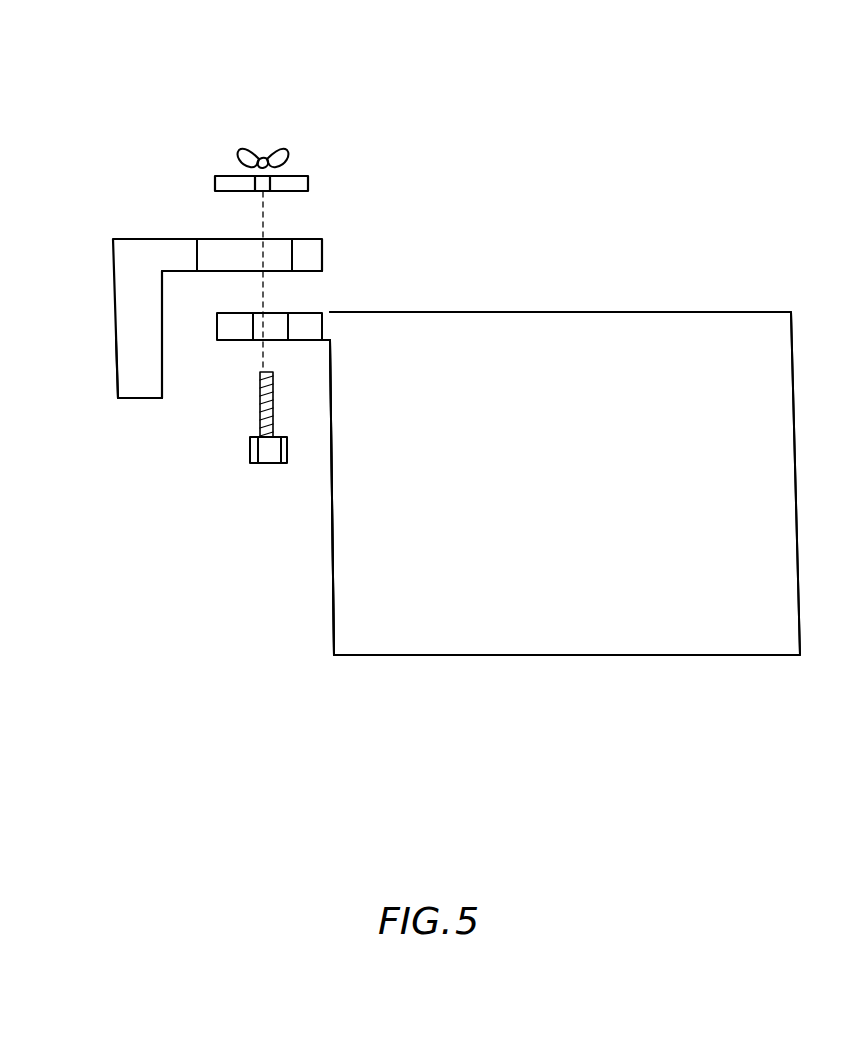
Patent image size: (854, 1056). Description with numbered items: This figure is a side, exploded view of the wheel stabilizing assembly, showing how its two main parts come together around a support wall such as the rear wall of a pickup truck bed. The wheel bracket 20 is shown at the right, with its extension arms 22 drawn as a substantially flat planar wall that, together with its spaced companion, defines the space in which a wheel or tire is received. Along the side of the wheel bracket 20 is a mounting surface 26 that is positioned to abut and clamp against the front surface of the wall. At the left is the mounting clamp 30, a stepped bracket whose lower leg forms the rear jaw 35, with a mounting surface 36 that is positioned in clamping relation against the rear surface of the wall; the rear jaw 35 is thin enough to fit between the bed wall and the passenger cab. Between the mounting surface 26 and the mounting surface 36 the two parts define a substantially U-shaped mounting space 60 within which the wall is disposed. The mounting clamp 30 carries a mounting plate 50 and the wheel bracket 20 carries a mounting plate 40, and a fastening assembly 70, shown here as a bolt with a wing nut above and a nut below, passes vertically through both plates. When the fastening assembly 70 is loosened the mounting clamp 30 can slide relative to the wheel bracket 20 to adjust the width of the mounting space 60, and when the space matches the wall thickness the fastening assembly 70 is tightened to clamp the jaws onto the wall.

The wheel bracket 20 is at (541, 262).
The extension arms 22 is at (568, 502).
The mounting surface 26 is at (330, 518).
The mounting clamp 30 is at (150, 202).
The rear jaw 35 is at (277, 250).
The mounting surface 36 is at (183, 373).
The mounting plate 40 is at (307, 313).
The mounting plate 50 is at (166, 239).
The mounting space 60 is at (235, 412).
The fastening assembly 70 is at (287, 127).